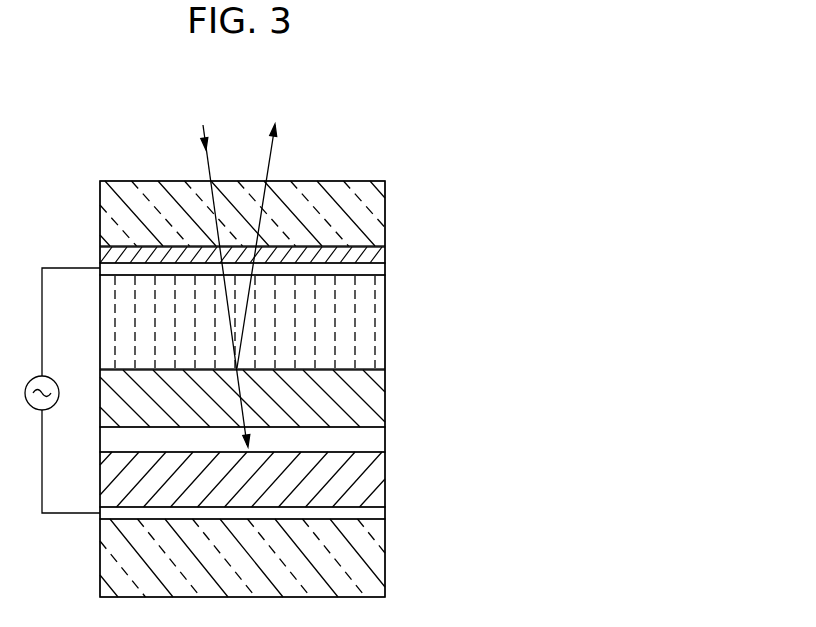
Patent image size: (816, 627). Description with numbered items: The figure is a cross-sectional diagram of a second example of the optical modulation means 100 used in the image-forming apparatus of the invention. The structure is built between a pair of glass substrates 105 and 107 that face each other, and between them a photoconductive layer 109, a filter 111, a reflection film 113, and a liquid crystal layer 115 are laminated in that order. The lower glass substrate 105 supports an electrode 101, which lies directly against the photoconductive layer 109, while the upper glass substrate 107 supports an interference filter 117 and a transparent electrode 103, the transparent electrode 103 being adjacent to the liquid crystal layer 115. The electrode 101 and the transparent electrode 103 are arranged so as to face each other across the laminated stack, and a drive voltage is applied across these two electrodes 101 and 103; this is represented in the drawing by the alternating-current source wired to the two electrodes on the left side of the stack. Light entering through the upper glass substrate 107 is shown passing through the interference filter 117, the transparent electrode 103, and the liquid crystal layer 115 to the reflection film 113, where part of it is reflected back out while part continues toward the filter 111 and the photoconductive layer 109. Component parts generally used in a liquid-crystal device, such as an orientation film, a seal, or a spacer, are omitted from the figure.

The optical modulation means 100 is at (356, 163).
The glass substrate 107 is at (385, 212).
The interference filter 117 is at (385, 251).
The transparent electrode 103 is at (385, 270).
The liquid crystal layer 115 is at (385, 330).
The reflection film 113 is at (385, 398).
The filter 111 is at (385, 438).
The photoconductive layer 109 is at (385, 478).
The electrode 101 is at (385, 513).
The glass substrate 105 is at (385, 573).